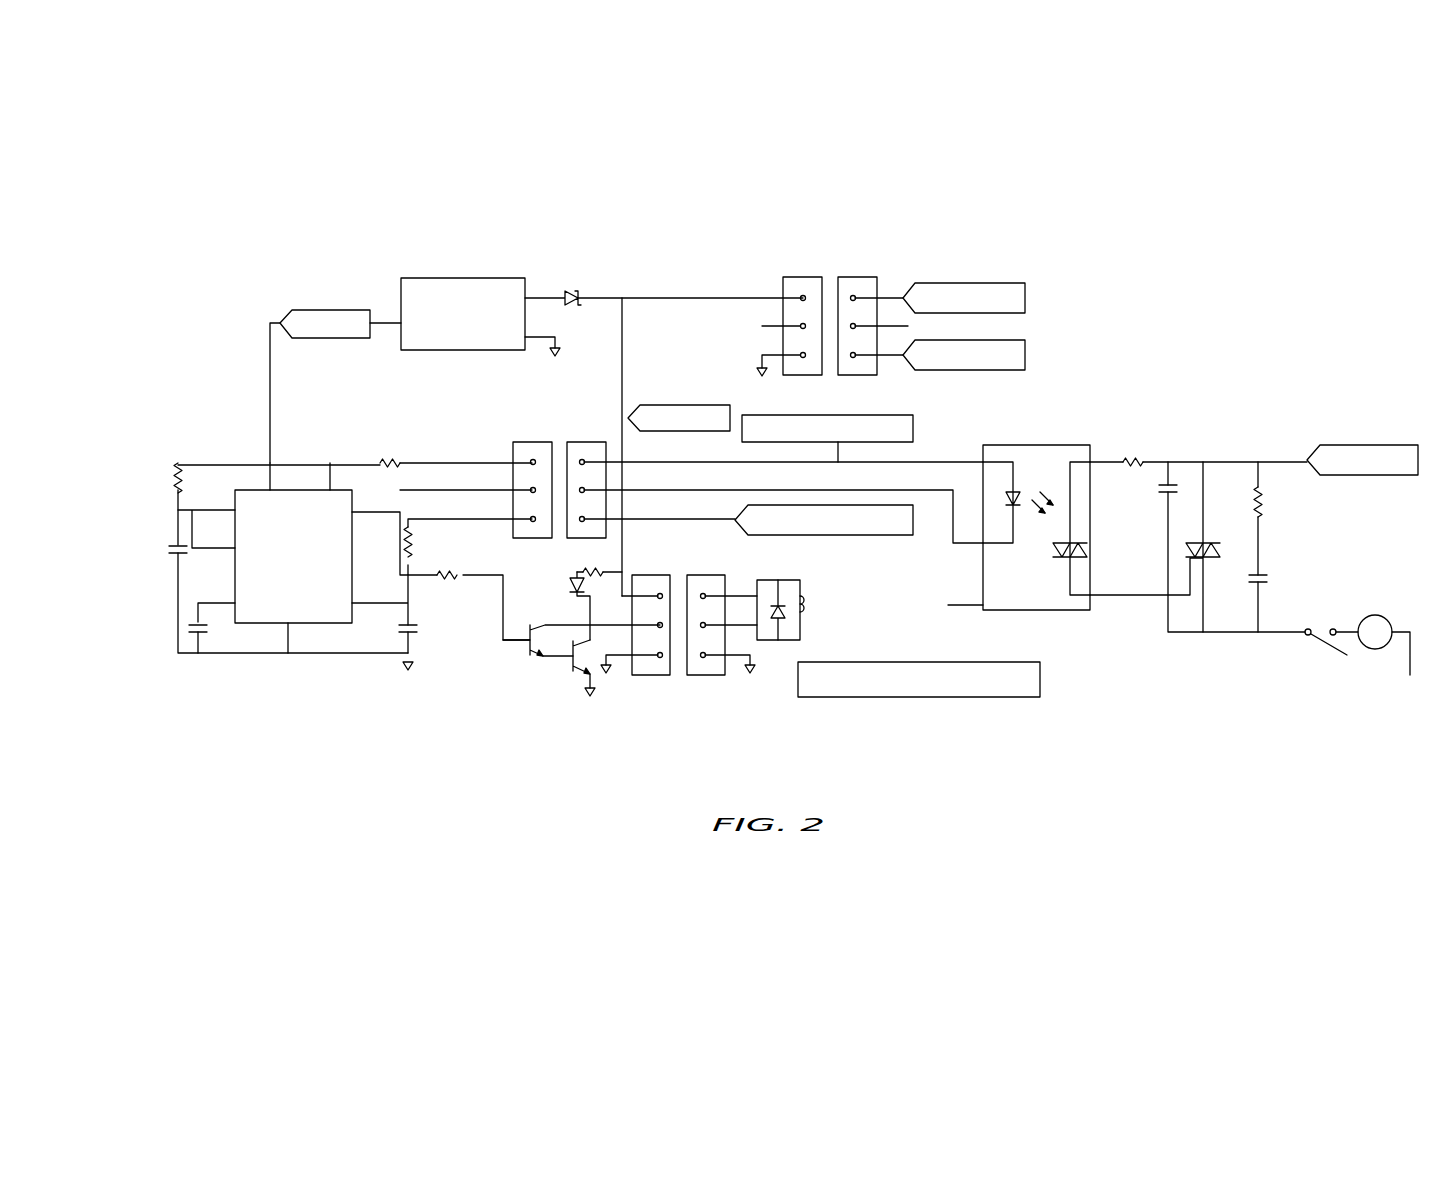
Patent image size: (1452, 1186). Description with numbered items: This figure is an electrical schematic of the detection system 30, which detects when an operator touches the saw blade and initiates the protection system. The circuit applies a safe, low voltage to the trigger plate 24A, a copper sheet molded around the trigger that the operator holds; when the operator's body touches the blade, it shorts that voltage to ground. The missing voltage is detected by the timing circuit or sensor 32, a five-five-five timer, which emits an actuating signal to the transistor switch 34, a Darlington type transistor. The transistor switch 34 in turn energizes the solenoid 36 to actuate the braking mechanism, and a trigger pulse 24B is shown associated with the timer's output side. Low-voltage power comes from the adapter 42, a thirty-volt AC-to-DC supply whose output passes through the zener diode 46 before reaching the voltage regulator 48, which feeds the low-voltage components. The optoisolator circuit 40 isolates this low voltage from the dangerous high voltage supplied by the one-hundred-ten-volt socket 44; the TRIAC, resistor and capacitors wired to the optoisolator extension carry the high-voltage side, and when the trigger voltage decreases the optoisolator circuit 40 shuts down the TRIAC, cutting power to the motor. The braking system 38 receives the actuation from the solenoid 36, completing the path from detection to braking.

The detection system 30 is at (218, 290).
The timing circuit or sensor 32 is at (308, 586).
The transistor switch 34 is at (547, 667).
The solenoid 36 is at (803, 617).
The breaking system 38 is at (835, 648).
The optoisolator circuit 40 is at (1068, 397).
The adapter 42 is at (993, 281).
The 110V socket 44 is at (1405, 443).
The zener diode 46 is at (576, 306).
The voltage regulator 48 is at (450, 300).
The trigger plate 24A is at (902, 537).
The trigger pulse 24B is at (913, 432).